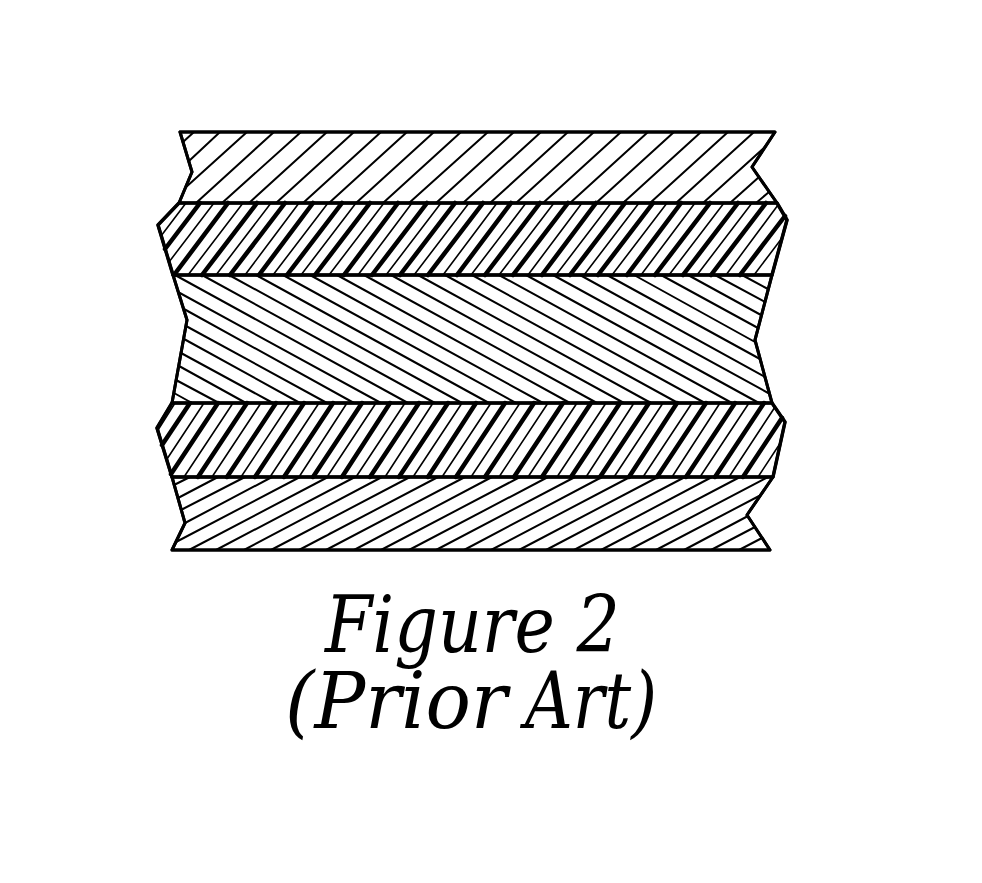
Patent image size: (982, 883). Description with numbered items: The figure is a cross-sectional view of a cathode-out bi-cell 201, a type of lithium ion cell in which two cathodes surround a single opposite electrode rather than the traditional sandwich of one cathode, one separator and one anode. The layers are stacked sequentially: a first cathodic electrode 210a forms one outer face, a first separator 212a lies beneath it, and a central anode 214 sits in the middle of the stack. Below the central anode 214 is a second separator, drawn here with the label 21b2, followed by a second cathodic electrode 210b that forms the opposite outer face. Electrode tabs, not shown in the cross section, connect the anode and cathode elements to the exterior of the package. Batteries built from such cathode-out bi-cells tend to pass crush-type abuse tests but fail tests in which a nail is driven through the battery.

The cathode-out bi-cell 201 is at (596, 106).
The first cathodic electrode 210a is at (200, 155).
The first separator 212a is at (186, 252).
The central anode 214 is at (200, 327).
The second intermediate layer 21b2 is at (186, 440).
The second cathodic electrode 210b is at (195, 532).